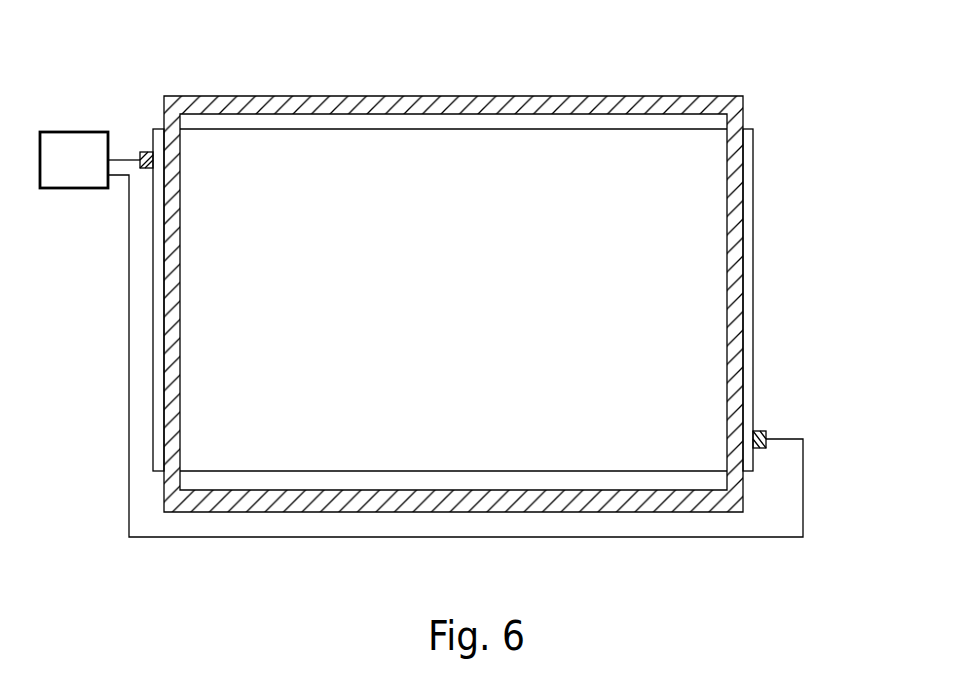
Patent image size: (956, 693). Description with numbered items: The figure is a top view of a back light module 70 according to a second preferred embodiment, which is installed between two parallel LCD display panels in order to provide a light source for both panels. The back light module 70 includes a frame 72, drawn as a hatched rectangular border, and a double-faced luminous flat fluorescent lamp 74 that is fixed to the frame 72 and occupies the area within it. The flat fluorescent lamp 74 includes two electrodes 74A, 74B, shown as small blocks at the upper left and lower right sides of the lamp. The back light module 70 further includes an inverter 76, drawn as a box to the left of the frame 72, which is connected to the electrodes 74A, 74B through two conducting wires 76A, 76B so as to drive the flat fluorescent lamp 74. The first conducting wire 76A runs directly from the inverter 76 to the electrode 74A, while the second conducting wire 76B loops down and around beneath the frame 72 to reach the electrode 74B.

The back light module 70 is at (823, 100).
The frame 72 is at (200, 96).
The flat fluorescent lamp 74 is at (387, 130).
The electrode 74A is at (146, 152).
The electrode 74B is at (759, 431).
The inverter 76 is at (88, 175).
The conducting wire 76A is at (123, 158).
The conducting wire 76B is at (129, 289).